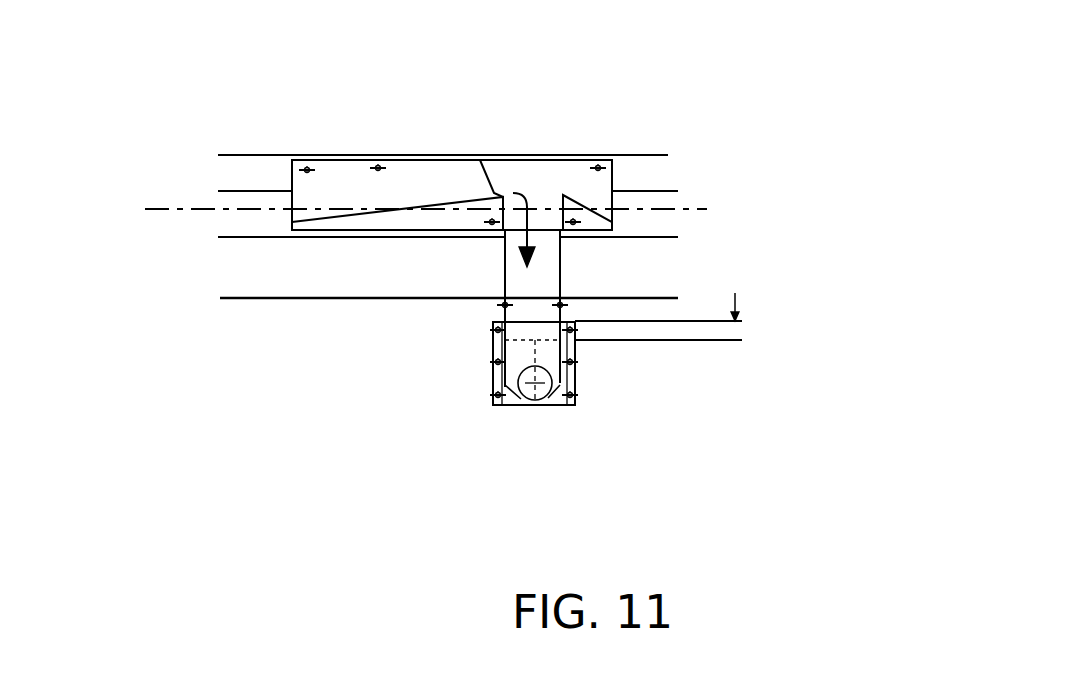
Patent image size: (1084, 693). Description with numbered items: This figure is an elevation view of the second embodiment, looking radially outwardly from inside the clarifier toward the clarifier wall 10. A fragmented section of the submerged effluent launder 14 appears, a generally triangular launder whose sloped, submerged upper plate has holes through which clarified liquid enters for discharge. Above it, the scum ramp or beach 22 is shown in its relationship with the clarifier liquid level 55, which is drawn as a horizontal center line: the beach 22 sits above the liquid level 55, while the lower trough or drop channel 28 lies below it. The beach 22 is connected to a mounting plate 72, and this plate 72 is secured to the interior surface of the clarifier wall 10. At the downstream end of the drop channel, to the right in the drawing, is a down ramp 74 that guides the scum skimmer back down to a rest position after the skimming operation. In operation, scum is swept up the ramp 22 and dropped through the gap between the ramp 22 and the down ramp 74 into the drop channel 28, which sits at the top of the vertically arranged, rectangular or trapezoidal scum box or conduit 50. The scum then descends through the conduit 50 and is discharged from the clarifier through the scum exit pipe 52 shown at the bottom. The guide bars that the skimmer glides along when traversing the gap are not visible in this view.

The clarifier wall 10 is at (658, 168).
The submerged effluent launder 14 is at (665, 233).
The scum beach 22 is at (405, 203).
The drop channel 28 is at (543, 225).
The scum box/conduit 50 is at (607, 257).
The scum exit pipe 52 is at (537, 402).
The clarifier liquid level 55 is at (173, 209).
The mounting plate 72 is at (520, 165).
The down ramp 74 is at (587, 201).